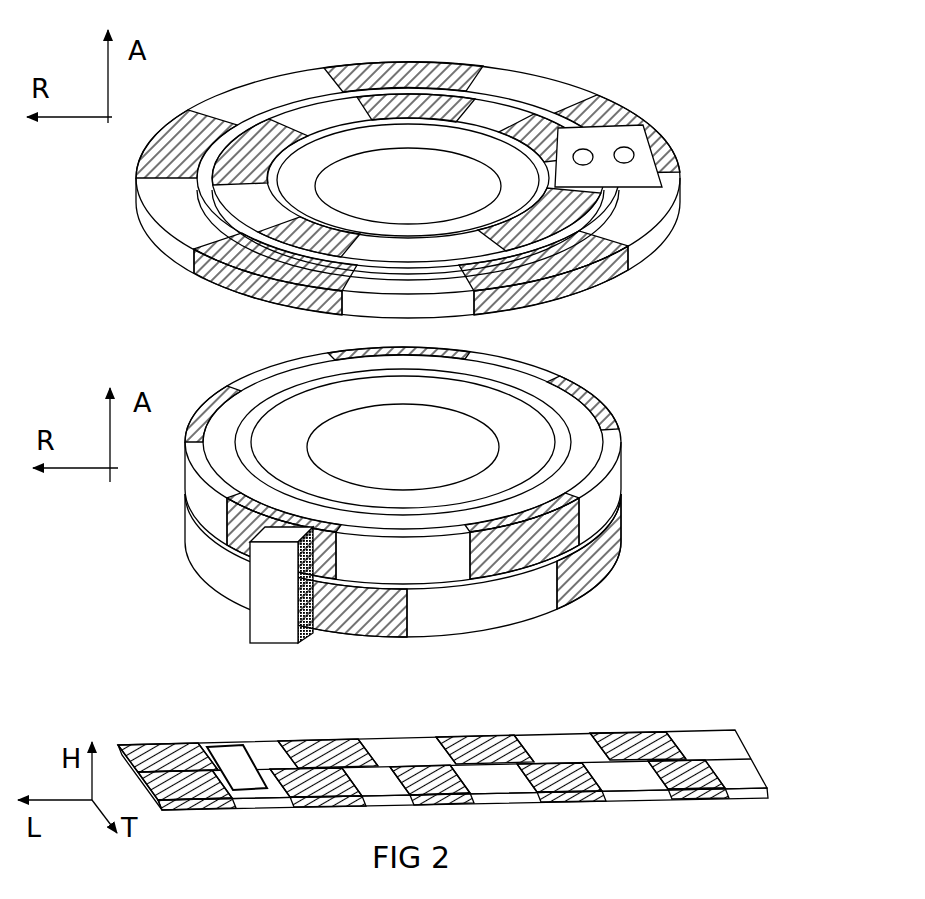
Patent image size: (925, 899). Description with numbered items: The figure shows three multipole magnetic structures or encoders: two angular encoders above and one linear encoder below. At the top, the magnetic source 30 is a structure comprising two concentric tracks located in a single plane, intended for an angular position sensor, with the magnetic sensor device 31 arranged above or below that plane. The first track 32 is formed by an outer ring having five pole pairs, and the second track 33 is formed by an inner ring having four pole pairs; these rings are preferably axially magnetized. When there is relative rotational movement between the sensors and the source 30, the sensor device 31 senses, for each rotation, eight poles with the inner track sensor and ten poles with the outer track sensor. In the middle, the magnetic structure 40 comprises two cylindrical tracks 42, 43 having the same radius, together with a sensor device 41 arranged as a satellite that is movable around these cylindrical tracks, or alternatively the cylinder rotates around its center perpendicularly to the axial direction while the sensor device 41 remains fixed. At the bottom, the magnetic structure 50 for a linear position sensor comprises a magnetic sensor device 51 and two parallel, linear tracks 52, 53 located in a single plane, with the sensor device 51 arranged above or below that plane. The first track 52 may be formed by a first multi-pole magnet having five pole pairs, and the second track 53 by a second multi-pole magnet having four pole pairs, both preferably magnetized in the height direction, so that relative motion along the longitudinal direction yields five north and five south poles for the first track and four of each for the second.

The magnetic source 30 is at (424, 188).
The magnetic sensor device 31 is at (637, 181).
The first track 32 is at (173, 215).
The second track 33 is at (328, 120).
The magnetic structure 40 is at (494, 495).
The sensor device 41 is at (293, 607).
The cylindrical track 42 is at (608, 484).
The cylindrical track 43 is at (613, 537).
The magnetic structure 50 is at (493, 745).
The magnetic sensor device 51 is at (223, 750).
The first track 52 is at (750, 777).
The second track 53 is at (740, 745).